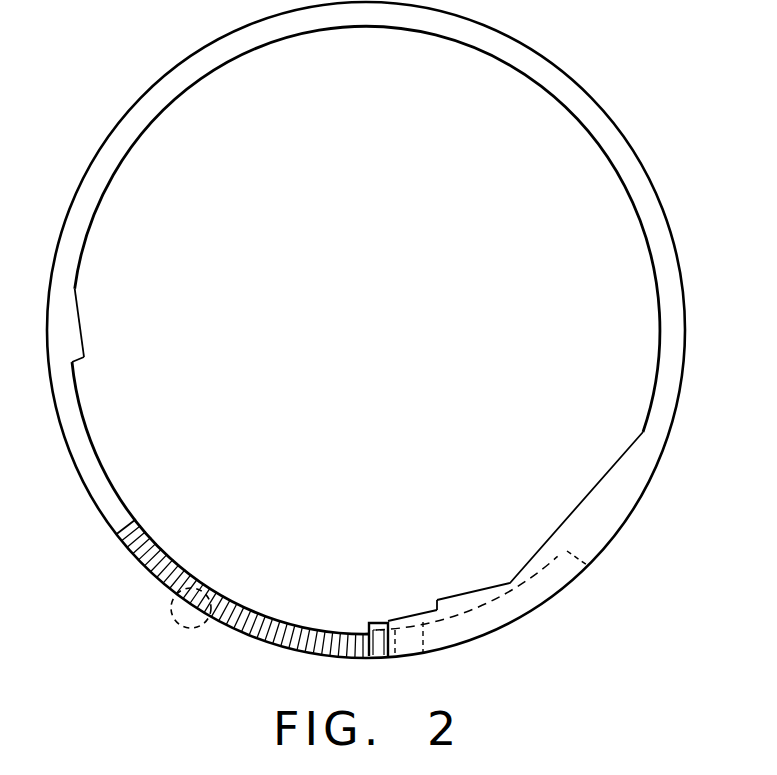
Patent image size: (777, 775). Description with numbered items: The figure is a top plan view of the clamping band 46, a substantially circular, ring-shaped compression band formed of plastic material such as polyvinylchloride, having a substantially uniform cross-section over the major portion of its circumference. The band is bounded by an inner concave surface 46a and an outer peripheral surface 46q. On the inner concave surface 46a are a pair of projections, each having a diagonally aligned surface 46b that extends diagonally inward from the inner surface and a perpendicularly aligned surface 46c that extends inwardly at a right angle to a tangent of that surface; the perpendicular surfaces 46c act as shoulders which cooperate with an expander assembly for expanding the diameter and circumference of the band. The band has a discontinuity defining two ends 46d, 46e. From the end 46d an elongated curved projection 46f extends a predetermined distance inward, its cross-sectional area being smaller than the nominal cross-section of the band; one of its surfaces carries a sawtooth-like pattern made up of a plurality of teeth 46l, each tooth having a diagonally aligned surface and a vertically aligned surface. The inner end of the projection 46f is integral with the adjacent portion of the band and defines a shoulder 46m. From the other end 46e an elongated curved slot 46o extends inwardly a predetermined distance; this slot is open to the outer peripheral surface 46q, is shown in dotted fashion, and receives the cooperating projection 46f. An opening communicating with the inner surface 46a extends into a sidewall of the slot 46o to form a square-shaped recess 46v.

The clamping band 46 is at (366, 330).
The inner concave surface 46a is at (163, 110).
The diagonally aligned surface 46b is at (80, 332).
The perpendicularly aligned surface 46c is at (77, 361).
The end 46d is at (395, 645).
The end 46e is at (367, 632).
The elongated curved projection 46f is at (273, 613).
The tooth 46l is at (250, 623).
The shoulder 46m is at (130, 530).
The elongated curved slot 46o is at (510, 612).
The outer peripheral surface 46q is at (610, 543).
The square-shaped recess 46v is at (415, 641).